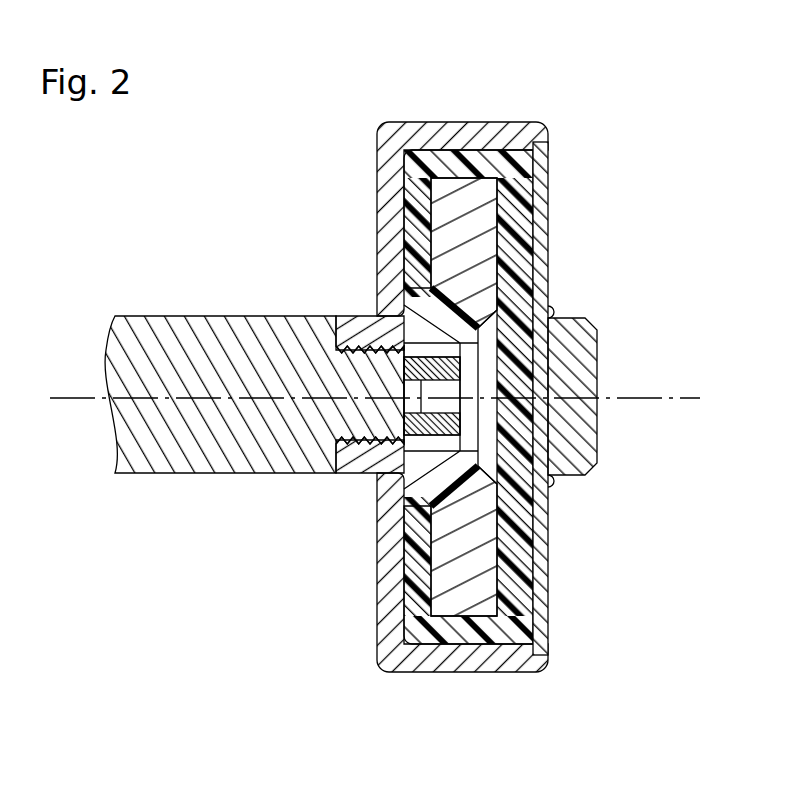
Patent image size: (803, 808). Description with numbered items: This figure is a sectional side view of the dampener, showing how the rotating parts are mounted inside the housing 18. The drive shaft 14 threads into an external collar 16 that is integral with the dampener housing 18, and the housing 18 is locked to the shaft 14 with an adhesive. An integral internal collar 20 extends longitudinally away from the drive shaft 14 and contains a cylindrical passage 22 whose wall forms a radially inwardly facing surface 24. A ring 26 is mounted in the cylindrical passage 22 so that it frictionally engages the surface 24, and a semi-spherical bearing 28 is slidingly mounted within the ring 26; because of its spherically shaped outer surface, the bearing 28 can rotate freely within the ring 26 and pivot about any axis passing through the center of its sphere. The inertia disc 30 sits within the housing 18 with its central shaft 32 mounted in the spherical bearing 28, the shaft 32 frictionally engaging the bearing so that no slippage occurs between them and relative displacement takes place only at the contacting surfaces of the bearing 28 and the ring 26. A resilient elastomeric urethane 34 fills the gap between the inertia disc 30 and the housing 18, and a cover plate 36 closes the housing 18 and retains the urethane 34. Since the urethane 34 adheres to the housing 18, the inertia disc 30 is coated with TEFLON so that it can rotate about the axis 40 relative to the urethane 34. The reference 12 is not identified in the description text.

The nut 12 is at (565, 470).
The drive shaft 14 is at (193, 475).
The external collar 16 is at (347, 325).
The dampener housing 18 is at (482, 672).
The internal collar 20 is at (420, 338).
The cylindrical passage 22 is at (540, 522).
The radially inwardly facing surface 24 is at (480, 300).
The ring 26 is at (470, 372).
The semi-spherical bearing 28 is at (380, 475).
The inertia disc 30 is at (492, 205).
The central shaft 32 is at (404, 388).
The urethane 34 is at (522, 248).
The cover plate 36 is at (545, 585).
The axis 40 is at (93, 397).